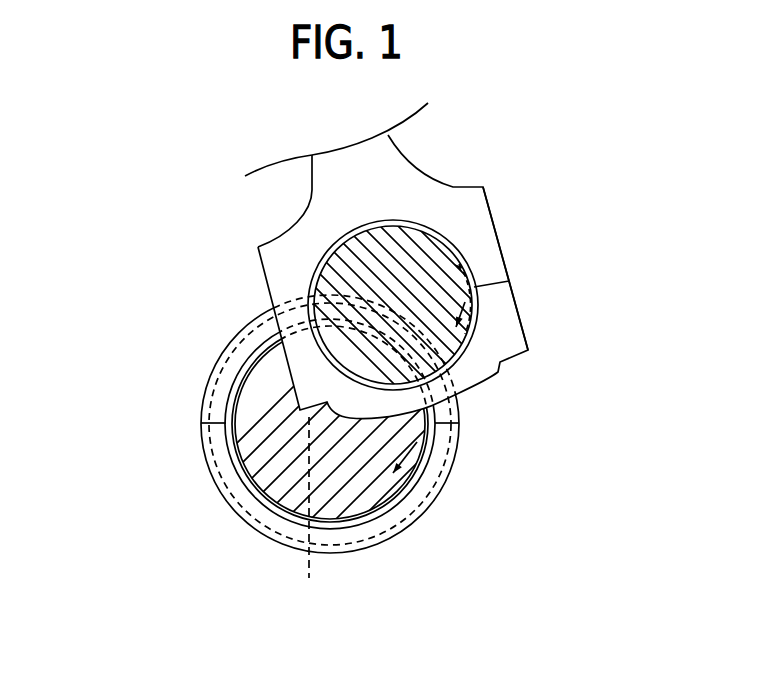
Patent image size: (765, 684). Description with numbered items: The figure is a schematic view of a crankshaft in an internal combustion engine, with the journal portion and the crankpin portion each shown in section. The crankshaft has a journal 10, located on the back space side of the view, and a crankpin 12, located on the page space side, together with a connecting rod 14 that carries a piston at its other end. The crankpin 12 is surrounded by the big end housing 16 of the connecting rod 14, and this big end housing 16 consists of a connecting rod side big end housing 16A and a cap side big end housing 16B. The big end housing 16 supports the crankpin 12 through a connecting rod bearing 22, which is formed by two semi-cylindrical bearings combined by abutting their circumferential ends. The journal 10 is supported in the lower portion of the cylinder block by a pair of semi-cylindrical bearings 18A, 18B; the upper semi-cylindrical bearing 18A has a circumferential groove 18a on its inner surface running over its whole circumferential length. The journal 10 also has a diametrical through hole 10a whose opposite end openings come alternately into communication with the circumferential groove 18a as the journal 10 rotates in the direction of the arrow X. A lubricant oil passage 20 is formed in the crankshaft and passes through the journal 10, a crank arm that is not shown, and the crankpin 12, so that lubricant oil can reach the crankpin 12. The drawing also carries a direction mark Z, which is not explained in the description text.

The journal 10 is at (270, 497).
The diametrical through hole 10a is at (310, 512).
The crankpin 12 is at (410, 247).
The connecting rod 14 is at (312, 180).
The big end housing 16 is at (497, 192).
The connecting rod side big end housing 16A is at (503, 241).
The cap side big end housing 16B is at (517, 307).
The semi-cylindrical bearing 18A is at (210, 378).
The semi-cylindrical bearing 18B is at (214, 469).
The circumferential groove 18a is at (213, 413).
The lubricant oil passage 20 is at (413, 295).
The connecting rod bearing 22 is at (480, 318).
The direction of rotation of the journal X is at (405, 462).
The Z direction Z is at (476, 334).